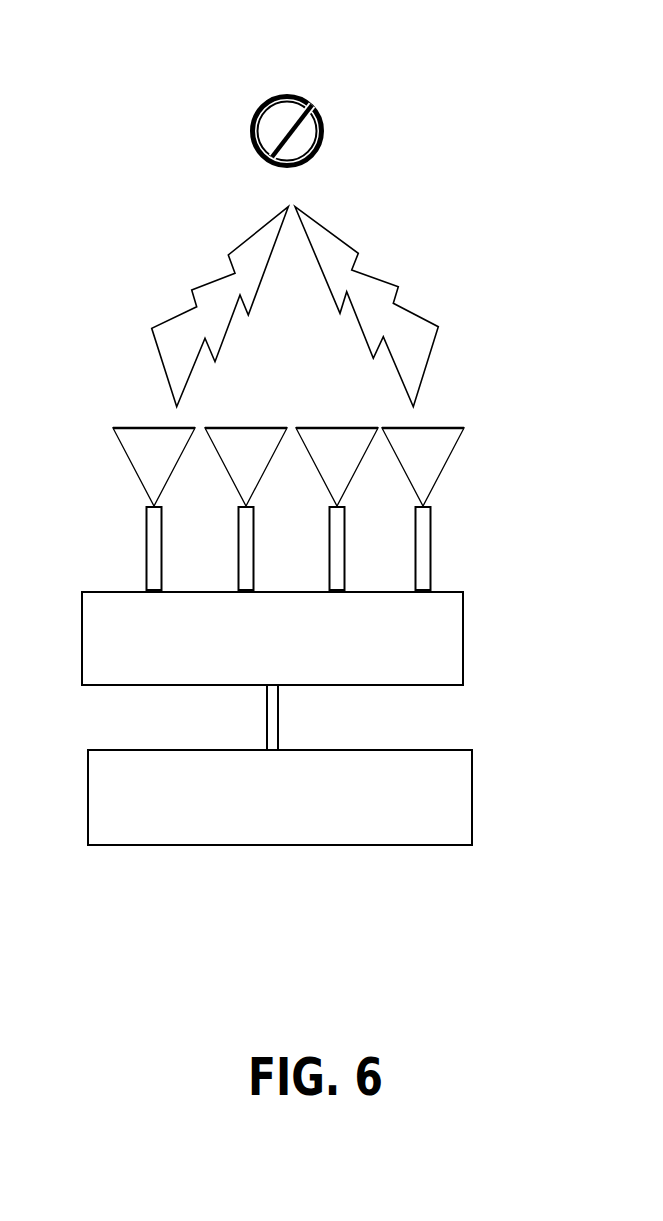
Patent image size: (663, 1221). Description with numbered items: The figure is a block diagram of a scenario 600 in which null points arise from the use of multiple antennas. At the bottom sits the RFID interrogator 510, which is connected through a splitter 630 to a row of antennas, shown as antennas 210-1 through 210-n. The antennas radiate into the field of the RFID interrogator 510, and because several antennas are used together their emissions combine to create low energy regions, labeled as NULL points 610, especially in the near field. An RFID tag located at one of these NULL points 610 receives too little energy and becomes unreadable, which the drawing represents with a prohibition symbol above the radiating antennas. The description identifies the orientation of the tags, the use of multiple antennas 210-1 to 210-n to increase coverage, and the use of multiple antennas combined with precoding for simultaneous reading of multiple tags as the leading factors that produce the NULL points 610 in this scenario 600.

The scenario of null points 600 is at (180, 50).
The NULL points 610 is at (251, 130).
The antenna 210-1 is at (132, 463).
The antenna 210-n is at (447, 460).
The splitter 630 is at (248, 670).
The RFID interrogator 510 is at (255, 830).